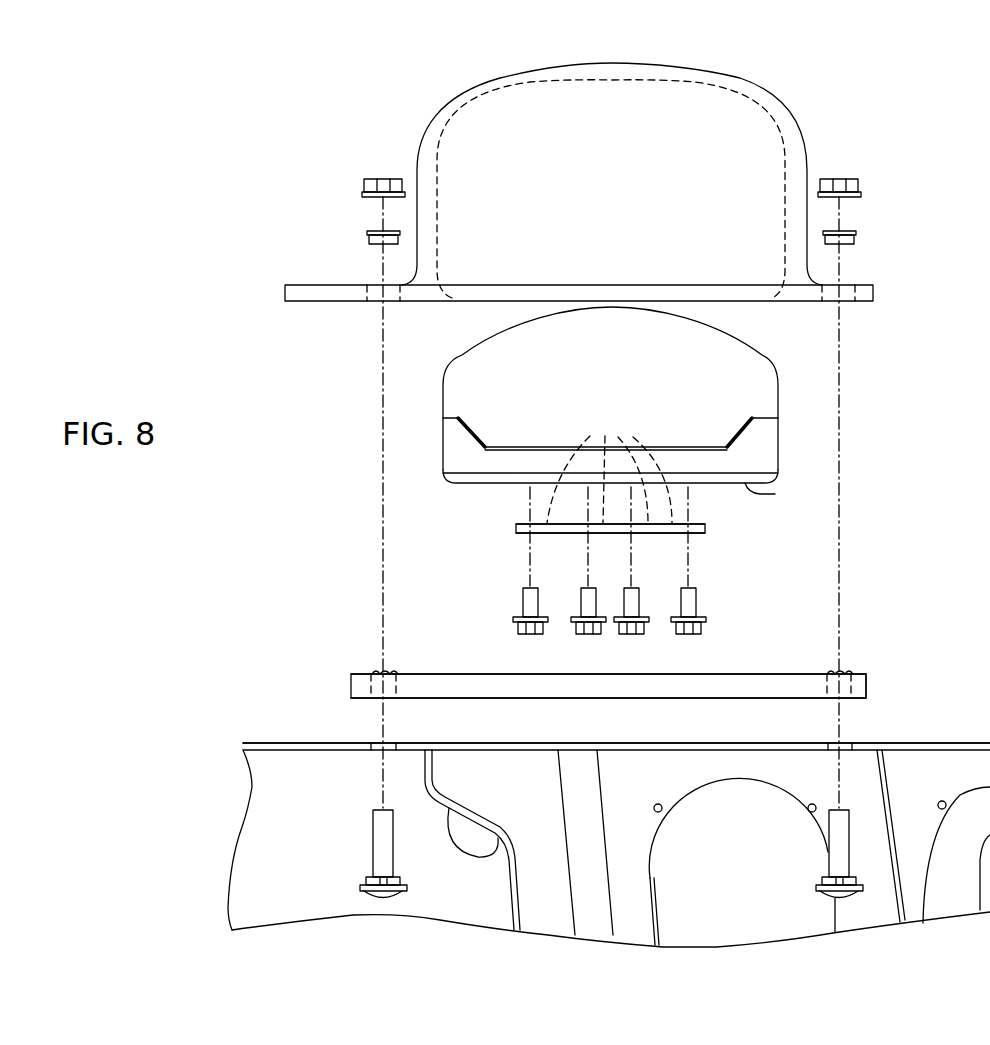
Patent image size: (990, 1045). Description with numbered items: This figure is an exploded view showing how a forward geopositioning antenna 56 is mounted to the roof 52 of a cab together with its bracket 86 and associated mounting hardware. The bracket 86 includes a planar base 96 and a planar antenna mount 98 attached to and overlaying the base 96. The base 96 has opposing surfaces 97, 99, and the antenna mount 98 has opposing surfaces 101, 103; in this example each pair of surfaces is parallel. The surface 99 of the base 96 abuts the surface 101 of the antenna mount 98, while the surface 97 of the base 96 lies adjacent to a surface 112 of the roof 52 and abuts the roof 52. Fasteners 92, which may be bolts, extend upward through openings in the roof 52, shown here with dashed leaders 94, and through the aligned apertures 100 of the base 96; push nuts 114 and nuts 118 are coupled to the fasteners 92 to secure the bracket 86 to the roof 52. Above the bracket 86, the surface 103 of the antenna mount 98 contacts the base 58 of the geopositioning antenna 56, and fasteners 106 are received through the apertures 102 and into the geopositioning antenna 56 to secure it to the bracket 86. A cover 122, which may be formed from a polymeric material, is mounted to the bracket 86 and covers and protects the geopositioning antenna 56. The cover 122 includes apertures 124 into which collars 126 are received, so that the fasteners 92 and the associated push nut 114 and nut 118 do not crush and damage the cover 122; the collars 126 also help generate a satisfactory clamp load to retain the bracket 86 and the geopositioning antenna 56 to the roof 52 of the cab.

The cover 122 is at (722, 80).
The nut 118 is at (382, 183).
The collar 126 is at (368, 232).
The aperture 124 is at (378, 303).
The geopositioning antenna 56 is at (591, 371).
The aperture 102 is at (609, 467).
The base 58 is at (775, 494).
The antenna mount 98 is at (528, 524).
The surface 103 is at (708, 524).
The surface 101 is at (704, 533).
The fastener 106 is at (676, 633).
The surface 99 is at (483, 674).
The base 96 is at (350, 688).
The bracket 86 is at (867, 684).
The surface 97 is at (857, 698).
The aperture 100 is at (397, 688).
The push nut 114 is at (372, 672).
The roof 52 is at (255, 743).
The surface 112 is at (276, 743).
The panel holes 94 is at (398, 747).
The fastener 92 is at (383, 850).